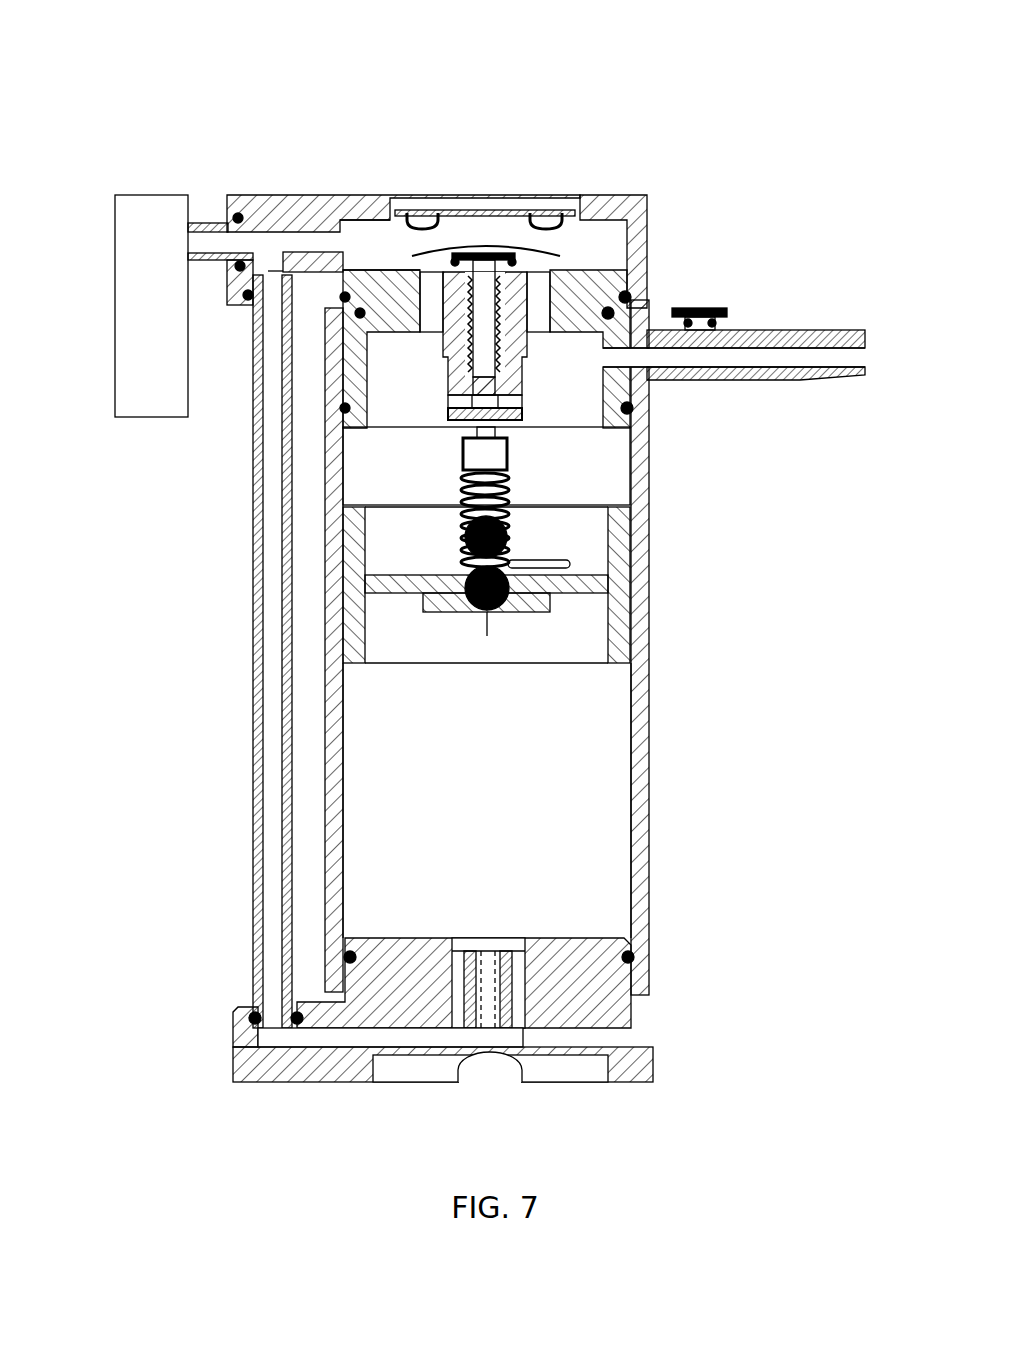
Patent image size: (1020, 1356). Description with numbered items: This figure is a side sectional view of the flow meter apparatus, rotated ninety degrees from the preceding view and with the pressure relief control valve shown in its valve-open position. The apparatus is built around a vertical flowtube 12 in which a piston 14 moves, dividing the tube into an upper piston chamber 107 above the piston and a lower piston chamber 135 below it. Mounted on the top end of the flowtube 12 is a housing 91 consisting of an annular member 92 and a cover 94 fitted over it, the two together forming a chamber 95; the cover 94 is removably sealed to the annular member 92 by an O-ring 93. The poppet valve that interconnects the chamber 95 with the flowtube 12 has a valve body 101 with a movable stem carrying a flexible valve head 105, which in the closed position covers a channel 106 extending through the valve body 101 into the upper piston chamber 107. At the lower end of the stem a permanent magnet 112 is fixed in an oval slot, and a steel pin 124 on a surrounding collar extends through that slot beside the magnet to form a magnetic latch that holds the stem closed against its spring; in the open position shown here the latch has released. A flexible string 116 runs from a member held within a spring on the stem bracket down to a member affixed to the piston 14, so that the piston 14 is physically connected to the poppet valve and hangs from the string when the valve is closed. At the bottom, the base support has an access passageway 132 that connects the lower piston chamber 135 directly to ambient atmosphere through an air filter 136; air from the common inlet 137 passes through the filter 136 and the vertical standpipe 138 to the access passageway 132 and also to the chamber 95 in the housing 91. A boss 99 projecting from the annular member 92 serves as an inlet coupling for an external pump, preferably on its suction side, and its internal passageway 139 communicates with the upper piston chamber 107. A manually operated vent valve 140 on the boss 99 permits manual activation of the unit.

The flowtube 12 is at (650, 612).
The piston 14 is at (632, 643).
The housing 91 is at (288, 194).
The annular member 92 is at (648, 310).
The O-ring 93 is at (647, 280).
The cover 94 is at (647, 230).
The chamber 95 is at (360, 245).
The boss 99 is at (758, 333).
The valve body 101 is at (595, 270).
The flexible valve head 105 is at (508, 245).
The channel 106 is at (432, 285).
The upper piston chamber 107 is at (368, 457).
The permanent magnet 112 is at (520, 394).
The flexible string 116 is at (570, 562).
The steel pin 124 is at (450, 413).
The access passageway 132 is at (475, 1035).
The lower piston chamber 135 is at (525, 868).
The air filter 136 is at (147, 195).
The common inlet 137 is at (210, 222).
The vertical standpipe 138 is at (257, 737).
The internal passageway 139 is at (697, 357).
The vent valve 140 is at (700, 308).